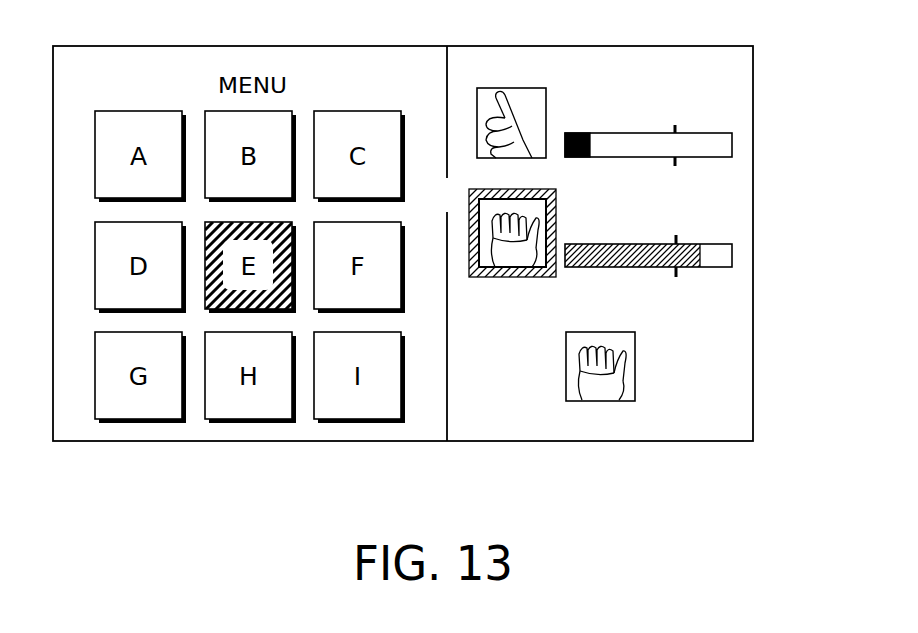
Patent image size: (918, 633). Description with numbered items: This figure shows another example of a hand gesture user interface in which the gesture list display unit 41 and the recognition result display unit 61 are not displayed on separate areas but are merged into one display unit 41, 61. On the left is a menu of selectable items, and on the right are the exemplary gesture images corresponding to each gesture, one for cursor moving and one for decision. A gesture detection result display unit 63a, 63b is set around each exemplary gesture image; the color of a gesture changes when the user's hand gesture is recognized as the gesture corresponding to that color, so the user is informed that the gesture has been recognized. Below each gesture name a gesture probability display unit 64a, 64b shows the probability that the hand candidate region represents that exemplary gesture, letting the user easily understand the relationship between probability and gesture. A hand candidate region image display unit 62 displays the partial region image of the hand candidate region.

The gesture list display unit 41 is at (403, 223).
The recognition result display unit 61 is at (600, 46).
The hand candidate region image display unit 62 is at (566, 368).
The gesture detection result display unit 63a is at (477, 128).
The gesture detection result display unit 63b is at (469, 232).
The gesture probability display unit 64a is at (645, 160).
The gesture probability display unit 64b is at (645, 268).